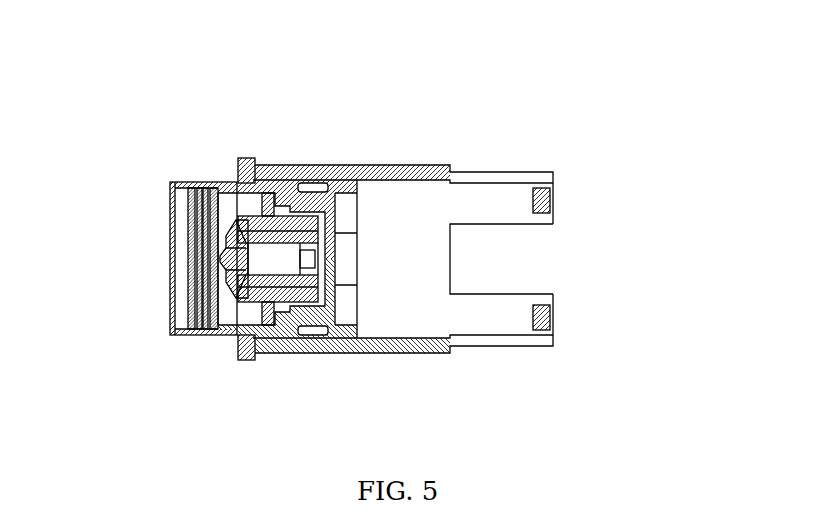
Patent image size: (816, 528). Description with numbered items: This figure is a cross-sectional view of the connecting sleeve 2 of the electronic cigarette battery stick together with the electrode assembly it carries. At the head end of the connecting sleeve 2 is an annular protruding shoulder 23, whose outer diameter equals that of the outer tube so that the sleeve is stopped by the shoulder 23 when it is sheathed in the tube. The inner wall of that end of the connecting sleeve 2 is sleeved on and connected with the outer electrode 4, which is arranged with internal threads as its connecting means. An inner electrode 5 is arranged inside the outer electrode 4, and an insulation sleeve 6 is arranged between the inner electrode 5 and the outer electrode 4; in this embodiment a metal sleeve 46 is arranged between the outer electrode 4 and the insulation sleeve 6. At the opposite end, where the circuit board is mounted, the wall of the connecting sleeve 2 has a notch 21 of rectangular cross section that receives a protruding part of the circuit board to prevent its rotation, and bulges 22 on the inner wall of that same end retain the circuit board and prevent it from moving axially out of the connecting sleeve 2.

The connecting sleeve 2 is at (338, 173).
The outer electrode 4 is at (198, 182).
The inner electrode 5 is at (235, 275).
The insulation sleeve 6 is at (250, 280).
The notch 21 is at (525, 265).
The bulges 22 is at (540, 200).
The annular protruding shoulder 23 is at (250, 157).
The metal sleeve 46 is at (298, 327).